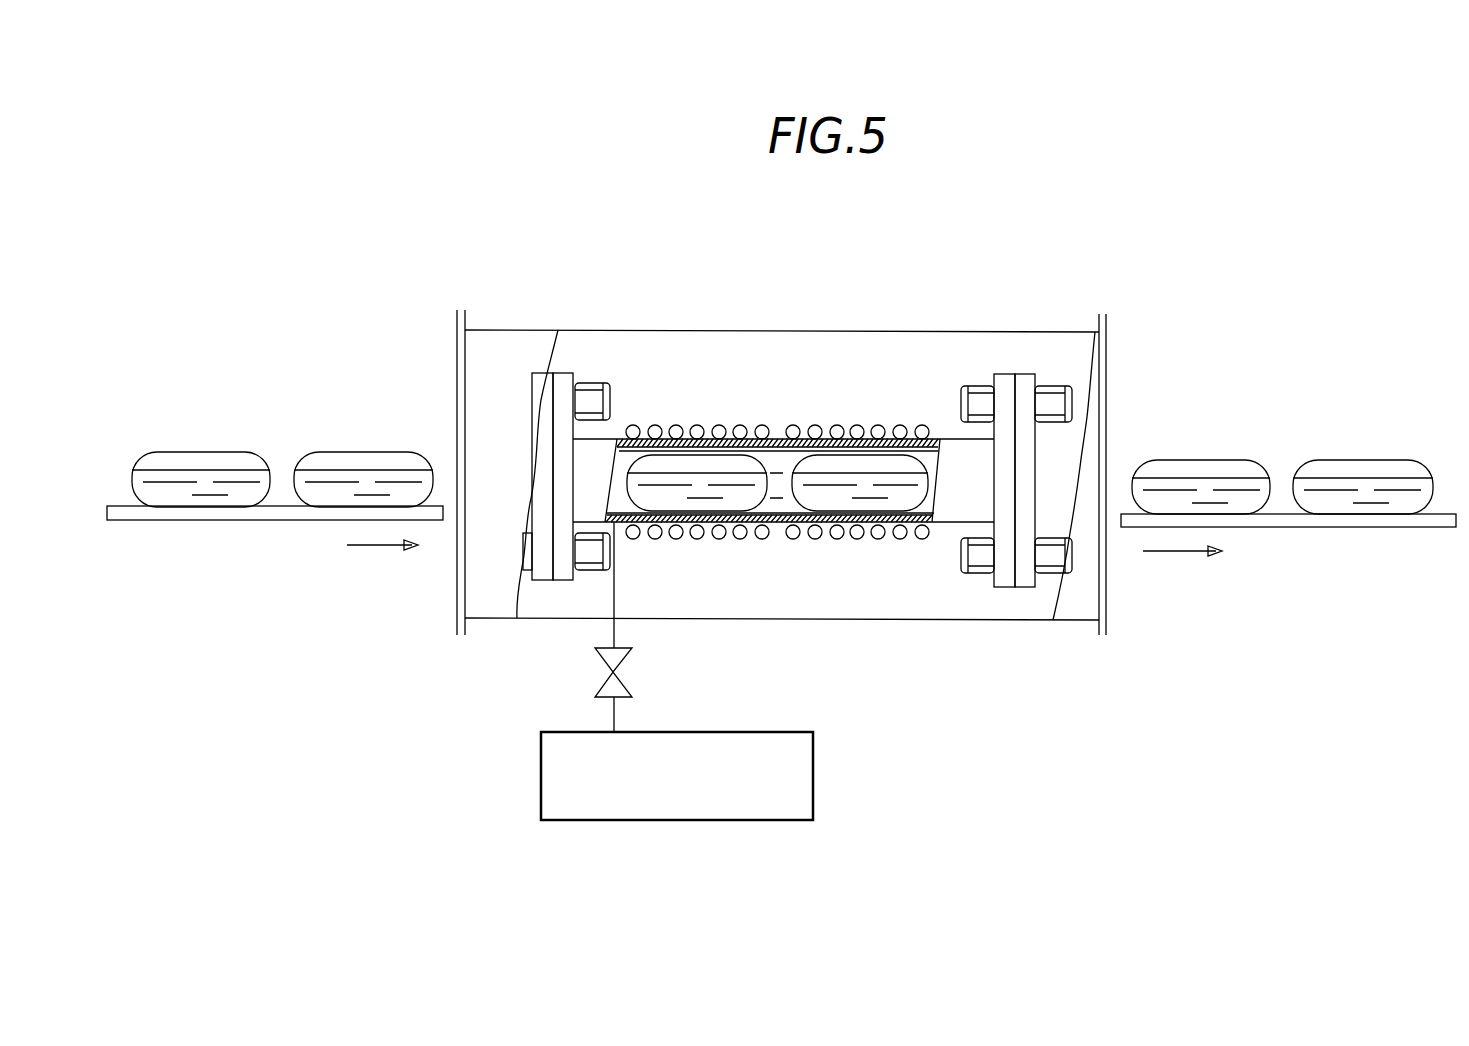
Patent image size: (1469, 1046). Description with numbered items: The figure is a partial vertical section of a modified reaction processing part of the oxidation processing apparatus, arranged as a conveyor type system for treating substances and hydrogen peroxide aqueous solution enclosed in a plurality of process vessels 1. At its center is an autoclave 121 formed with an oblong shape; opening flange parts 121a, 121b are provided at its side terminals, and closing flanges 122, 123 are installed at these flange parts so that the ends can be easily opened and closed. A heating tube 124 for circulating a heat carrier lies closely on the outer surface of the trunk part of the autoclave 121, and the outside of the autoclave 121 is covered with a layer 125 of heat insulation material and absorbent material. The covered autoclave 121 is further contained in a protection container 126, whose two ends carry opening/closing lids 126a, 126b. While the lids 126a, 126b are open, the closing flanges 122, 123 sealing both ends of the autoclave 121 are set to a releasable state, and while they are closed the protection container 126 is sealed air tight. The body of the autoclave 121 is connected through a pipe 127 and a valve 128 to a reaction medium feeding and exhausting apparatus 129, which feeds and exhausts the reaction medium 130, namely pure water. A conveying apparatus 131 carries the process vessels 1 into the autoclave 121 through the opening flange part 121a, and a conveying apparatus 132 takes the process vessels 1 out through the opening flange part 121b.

The process vessel 1 is at (200, 452).
The autoclave 121 is at (773, 439).
The opening flange part 121a is at (566, 375).
The opening flange part 121b is at (1003, 382).
The closing flange 122 is at (537, 582).
The closing flange 123 is at (1023, 588).
The heating tube 124 is at (855, 428).
The layer of heat insulation material and absorbent material 125 is at (645, 363).
The protection container 126 is at (1068, 331).
The opening/closing lid 126a is at (457, 337).
The opening/closing lid 126b is at (1107, 375).
The pipe 127 is at (615, 635).
The valve 128 is at (623, 682).
The reaction medium feeding and exhausting apparatus 129 is at (813, 771).
The reaction medium 130 is at (776, 500).
The conveying apparatus 131 is at (297, 521).
The conveying apparatus 132 is at (1308, 528).